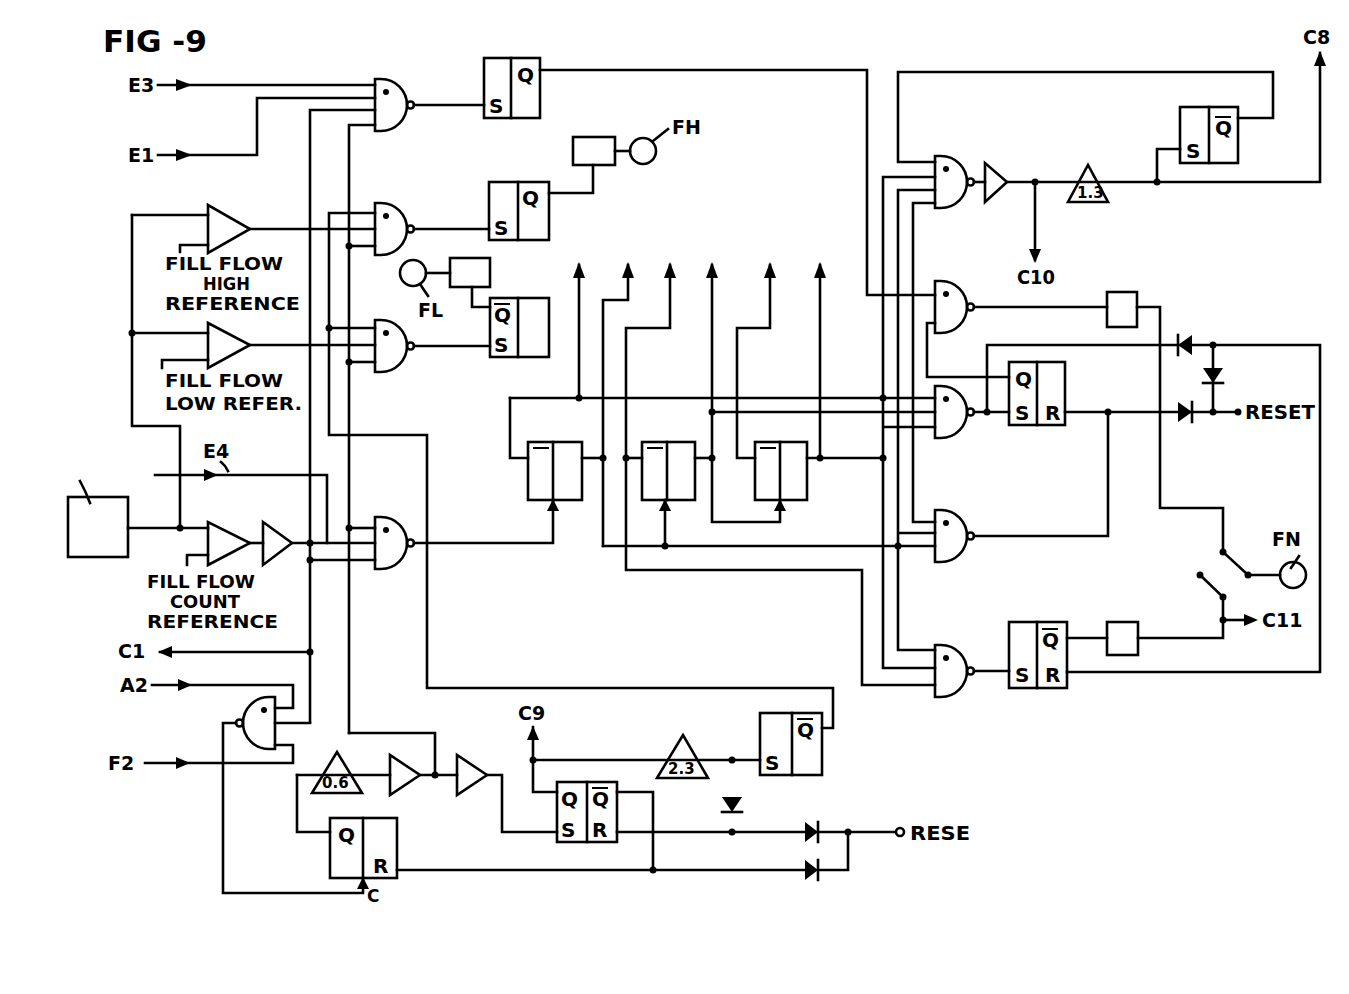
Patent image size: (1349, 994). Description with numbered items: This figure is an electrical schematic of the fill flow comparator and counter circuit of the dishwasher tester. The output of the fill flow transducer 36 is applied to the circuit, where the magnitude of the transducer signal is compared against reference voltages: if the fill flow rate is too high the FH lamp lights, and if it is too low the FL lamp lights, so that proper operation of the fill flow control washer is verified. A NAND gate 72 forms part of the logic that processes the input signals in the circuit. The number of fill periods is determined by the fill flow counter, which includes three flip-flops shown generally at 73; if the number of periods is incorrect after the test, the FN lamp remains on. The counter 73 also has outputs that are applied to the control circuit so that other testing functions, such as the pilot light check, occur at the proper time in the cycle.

The fill flow transducer 36 is at (97, 543).
The NAND gate 72 is at (212, 797).
The fill flow counter flip-flops 73 is at (580, 529).